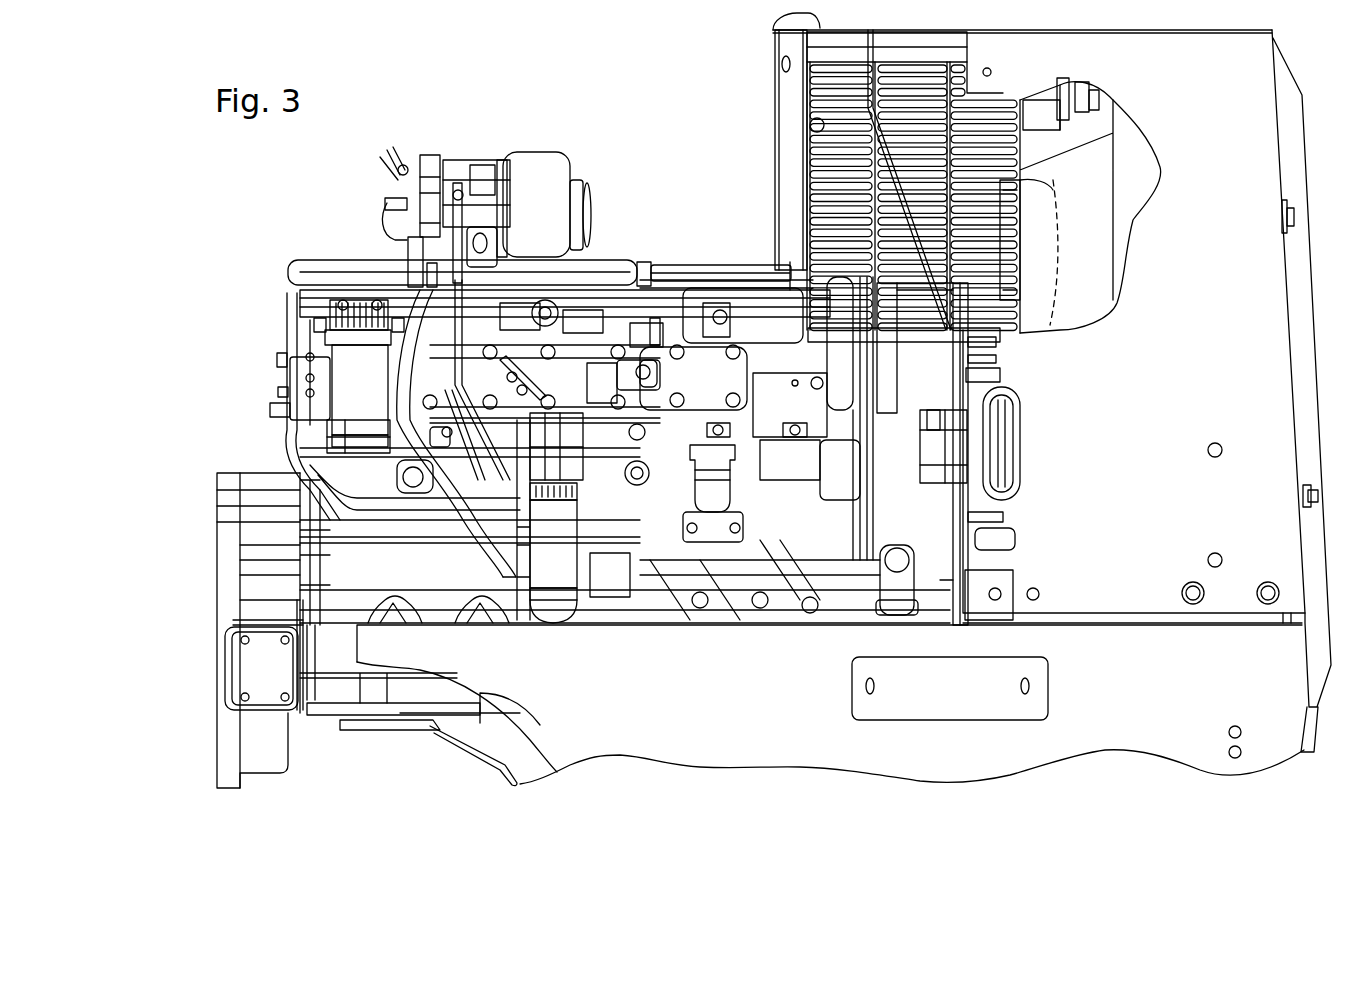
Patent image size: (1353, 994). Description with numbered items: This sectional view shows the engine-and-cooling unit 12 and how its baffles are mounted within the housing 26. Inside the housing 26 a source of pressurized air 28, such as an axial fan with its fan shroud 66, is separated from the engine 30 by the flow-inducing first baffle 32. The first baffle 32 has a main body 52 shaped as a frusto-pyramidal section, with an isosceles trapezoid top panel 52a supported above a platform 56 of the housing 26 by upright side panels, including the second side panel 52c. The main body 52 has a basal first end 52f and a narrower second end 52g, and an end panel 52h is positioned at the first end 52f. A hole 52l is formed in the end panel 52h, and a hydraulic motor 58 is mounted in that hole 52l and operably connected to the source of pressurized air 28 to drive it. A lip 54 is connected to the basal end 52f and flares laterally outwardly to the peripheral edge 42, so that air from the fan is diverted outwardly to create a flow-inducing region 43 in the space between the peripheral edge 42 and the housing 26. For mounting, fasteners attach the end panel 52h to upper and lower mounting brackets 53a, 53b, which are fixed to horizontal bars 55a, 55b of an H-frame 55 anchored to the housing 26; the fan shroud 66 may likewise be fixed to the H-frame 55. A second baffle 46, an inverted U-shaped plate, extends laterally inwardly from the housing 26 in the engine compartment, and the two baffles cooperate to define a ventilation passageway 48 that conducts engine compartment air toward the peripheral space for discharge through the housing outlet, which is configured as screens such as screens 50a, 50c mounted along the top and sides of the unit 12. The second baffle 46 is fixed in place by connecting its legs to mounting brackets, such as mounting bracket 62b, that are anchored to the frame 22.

The engine-and-cooling unit 12 is at (451, 122).
The frame 22 is at (1139, 729).
The housing 26 is at (1237, 120).
The source of pressurized air 28 is at (1007, 194).
The engine 30 is at (345, 275).
The first baffle 32 is at (932, 246).
The peripheral edge 42 is at (868, 32).
The flow-inducing region 43 is at (885, 49).
The second baffle 46 is at (790, 157).
The ventilation passageway 48 is at (818, 134).
The screen 50a is at (797, 13).
The screen 50c is at (812, 54).
The main body 52 is at (890, 200).
The top panel 52a is at (935, 282).
The second side panel 52c is at (944, 554).
The first end 52f is at (999, 378).
The second end 52g is at (858, 212).
The end panel 52h is at (952, 570).
The hole 52l is at (952, 468).
The upper mounting bracket 53a is at (995, 363).
The lower mounting bracket 53b is at (1005, 542).
The lip 54 is at (828, 101).
The H-frame 55 is at (1014, 334).
The horizontal bar 55a is at (1006, 386).
The horizontal bar 55b is at (1002, 518).
The platform 56 is at (933, 627).
The hydraulic motor 58 is at (946, 413).
The mounting bracket 62b is at (775, 53).
The fan shroud 66 is at (1098, 162).